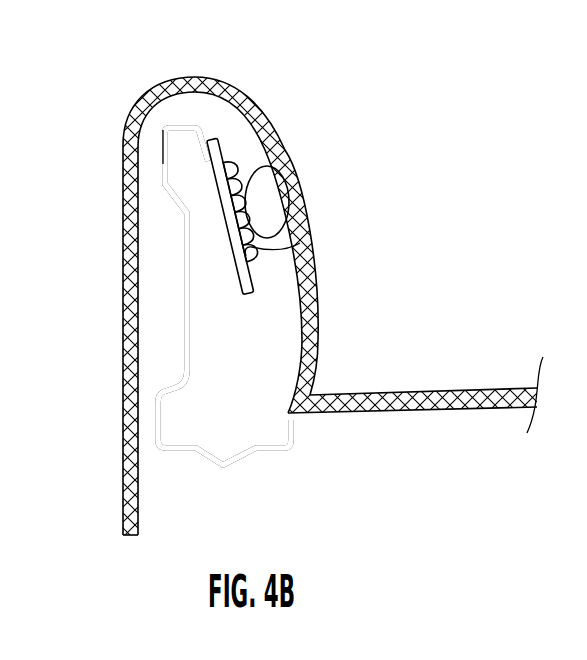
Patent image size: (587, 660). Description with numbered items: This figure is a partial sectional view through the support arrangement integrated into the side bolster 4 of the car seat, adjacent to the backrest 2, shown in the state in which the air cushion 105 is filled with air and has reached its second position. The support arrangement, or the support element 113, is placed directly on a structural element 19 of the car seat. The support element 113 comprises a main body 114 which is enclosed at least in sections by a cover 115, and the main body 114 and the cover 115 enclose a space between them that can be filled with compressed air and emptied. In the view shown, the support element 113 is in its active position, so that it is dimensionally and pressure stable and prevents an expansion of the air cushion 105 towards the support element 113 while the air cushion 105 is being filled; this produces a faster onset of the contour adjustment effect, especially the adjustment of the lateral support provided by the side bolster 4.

The backrest 2 is at (458, 399).
The side bolster 4 is at (130, 283).
The structural element 19 is at (208, 148).
The air cushion 105 is at (270, 197).
The support element 113 is at (300, 243).
The main body 114 is at (248, 251).
The cover 115 is at (233, 170).